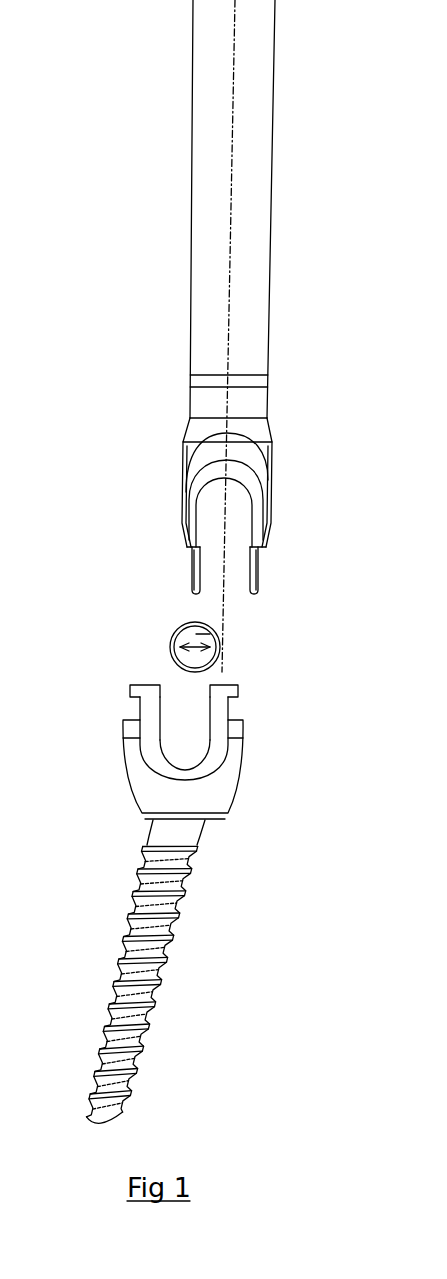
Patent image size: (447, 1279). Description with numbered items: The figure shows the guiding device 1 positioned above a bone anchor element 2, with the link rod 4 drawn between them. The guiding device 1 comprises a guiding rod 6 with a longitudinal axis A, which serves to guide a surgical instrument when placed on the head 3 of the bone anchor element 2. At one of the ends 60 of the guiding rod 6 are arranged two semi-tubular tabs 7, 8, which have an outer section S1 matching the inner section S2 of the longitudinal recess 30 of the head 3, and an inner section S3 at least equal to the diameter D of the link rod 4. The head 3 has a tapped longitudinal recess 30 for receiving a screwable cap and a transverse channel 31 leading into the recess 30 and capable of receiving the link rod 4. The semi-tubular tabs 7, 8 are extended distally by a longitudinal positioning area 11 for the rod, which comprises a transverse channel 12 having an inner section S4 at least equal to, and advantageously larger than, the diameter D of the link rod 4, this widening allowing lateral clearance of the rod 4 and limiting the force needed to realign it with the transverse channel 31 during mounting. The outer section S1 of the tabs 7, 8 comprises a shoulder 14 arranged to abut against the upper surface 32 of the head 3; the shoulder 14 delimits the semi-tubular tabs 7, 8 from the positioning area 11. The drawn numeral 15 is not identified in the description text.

The guiding device 1 is at (175, 228).
The bone anchor element 2 is at (197, 1002).
The head 3 is at (217, 790).
The link rod 4 is at (221, 637).
The guiding rod 6 is at (277, 131).
The semi-tubular tab 7 is at (188, 565).
The semi-tubular tab 8 is at (260, 562).
The longitudinal positioning area 11 is at (274, 497).
The transverse channel 12 is at (229, 492).
The shoulder 14 is at (274, 520).
The domed end portion 15 is at (205, 430).
The longitudinal recess 30 is at (165, 698).
The transverse channel 31 is at (185, 742).
The upper surface 32 is at (146, 686).
The end of the guiding rod 60 is at (290, 402).
The outer section S1 is at (167, 582).
The inner section S2 is at (209, 722).
The inner section S3 is at (248, 555).
The inner section S4 is at (250, 520).
The diameter D is at (177, 622).